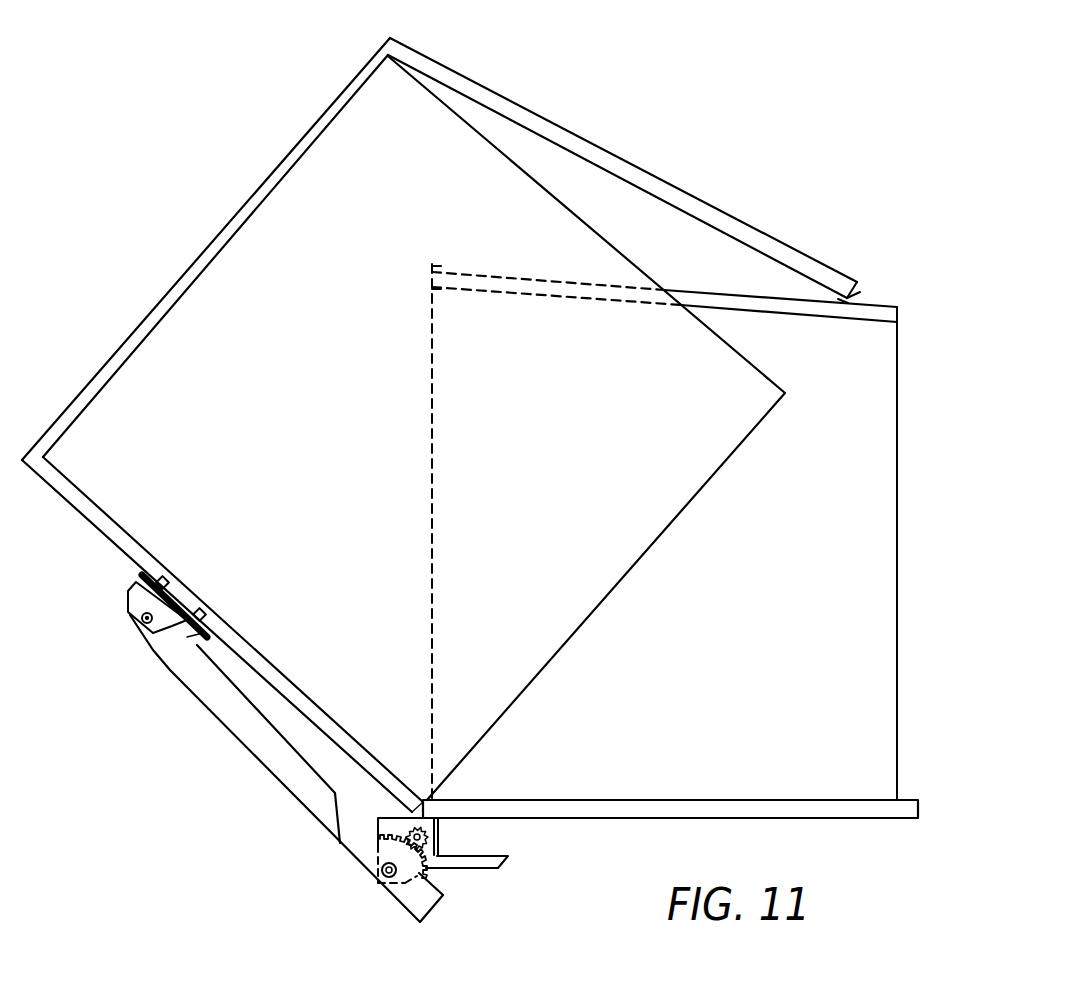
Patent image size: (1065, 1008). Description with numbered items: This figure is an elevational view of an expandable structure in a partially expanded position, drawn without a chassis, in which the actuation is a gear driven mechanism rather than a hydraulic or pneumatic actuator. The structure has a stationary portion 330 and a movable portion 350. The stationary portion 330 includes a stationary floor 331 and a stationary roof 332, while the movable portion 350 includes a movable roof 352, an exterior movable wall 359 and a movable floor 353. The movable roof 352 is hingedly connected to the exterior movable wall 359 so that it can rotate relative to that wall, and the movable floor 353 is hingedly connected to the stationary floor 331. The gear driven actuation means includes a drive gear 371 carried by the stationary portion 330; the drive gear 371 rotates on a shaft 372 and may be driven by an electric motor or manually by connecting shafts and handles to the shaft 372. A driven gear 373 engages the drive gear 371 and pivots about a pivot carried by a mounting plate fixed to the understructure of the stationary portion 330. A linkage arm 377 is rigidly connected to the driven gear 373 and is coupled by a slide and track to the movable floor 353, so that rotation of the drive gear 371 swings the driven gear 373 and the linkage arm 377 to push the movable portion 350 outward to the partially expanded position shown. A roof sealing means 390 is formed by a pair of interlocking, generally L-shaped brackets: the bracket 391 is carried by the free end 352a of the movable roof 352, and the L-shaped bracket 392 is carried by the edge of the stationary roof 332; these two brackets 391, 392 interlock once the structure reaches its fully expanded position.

The stationary portion 330 is at (841, 545).
The stationary floor 331 is at (670, 786).
The stationary roof 332 is at (556, 309).
The movable portion 350 is at (622, 168).
The movable roof 352 is at (587, 428).
The free end of movable roof 352a is at (906, 262).
The movable floor 353 is at (222, 634).
The exterior movable wall 359 is at (206, 249).
The drive gear 371 is at (470, 801).
The shaft 372 is at (472, 843).
The driven gear 373 is at (446, 873).
The linkage arm 377 is at (285, 748).
The roof sealing means 390 is at (907, 279).
The bracket 391 is at (781, 279).
The L-shaped bracket 392 is at (405, 511).